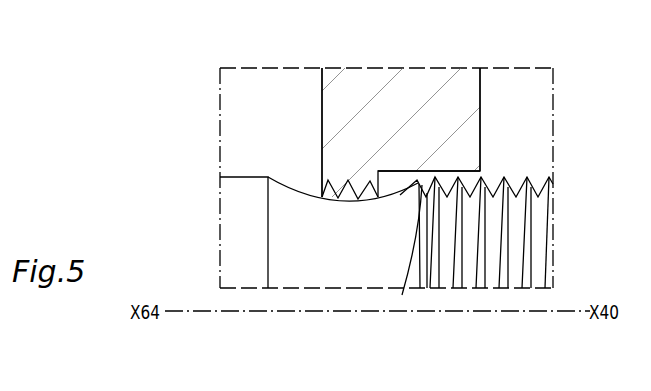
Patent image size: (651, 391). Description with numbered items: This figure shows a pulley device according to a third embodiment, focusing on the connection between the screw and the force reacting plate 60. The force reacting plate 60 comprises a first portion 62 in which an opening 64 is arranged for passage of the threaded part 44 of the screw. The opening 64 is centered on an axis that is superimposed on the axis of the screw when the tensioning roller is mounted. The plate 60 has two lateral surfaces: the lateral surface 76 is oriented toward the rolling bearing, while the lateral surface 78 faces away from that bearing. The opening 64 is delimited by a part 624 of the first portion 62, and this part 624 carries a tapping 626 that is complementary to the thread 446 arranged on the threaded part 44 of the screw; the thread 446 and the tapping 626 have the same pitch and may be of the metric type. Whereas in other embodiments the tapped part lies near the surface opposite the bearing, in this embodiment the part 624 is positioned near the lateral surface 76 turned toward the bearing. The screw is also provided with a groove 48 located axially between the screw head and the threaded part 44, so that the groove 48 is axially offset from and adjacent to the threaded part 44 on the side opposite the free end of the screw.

The threaded part 44 is at (523, 227).
The thread 446 is at (498, 175).
The groove 48 is at (347, 247).
The force reacting plate 60 is at (437, 80).
The first portion 62 is at (458, 120).
The opening 64 is at (402, 295).
The part 624 is at (360, 178).
The tapping 626 is at (322, 204).
The lateral surface 76 is at (316, 111).
The lateral surface 78 is at (490, 96).